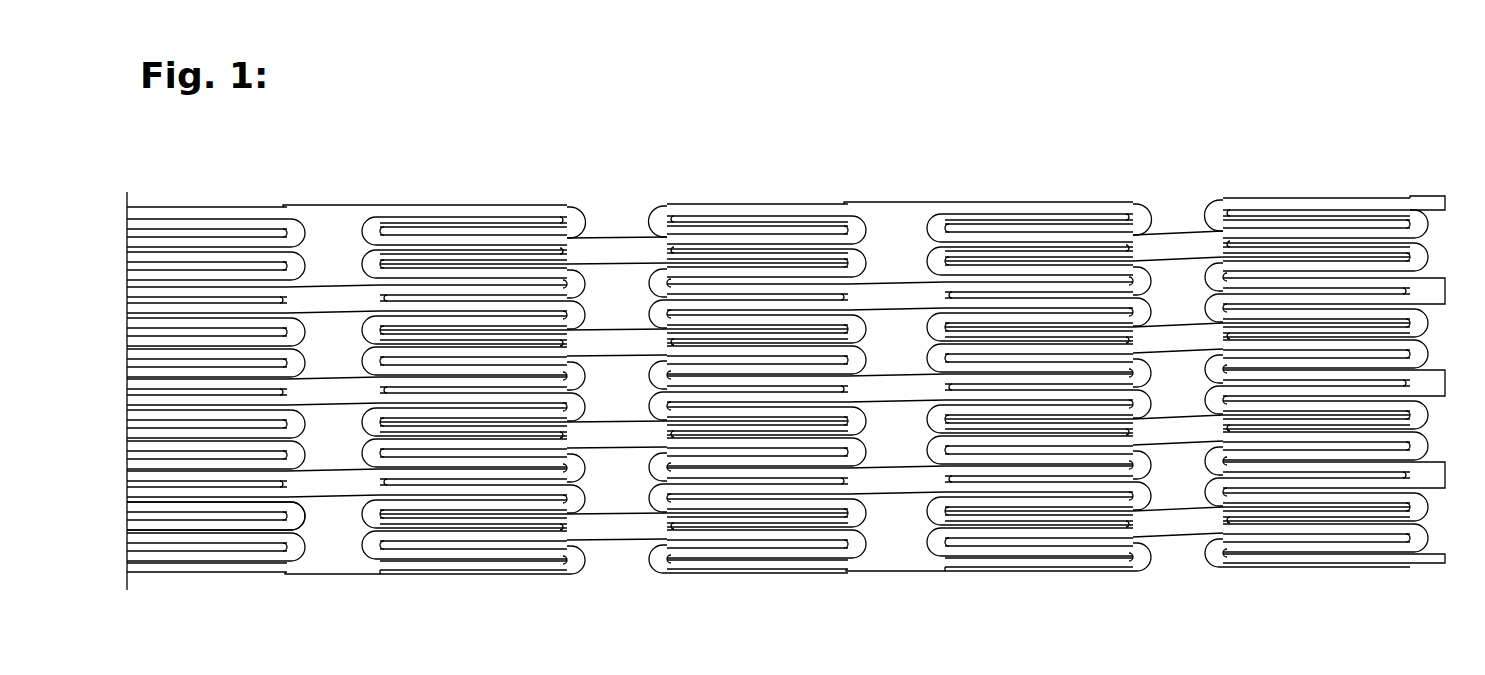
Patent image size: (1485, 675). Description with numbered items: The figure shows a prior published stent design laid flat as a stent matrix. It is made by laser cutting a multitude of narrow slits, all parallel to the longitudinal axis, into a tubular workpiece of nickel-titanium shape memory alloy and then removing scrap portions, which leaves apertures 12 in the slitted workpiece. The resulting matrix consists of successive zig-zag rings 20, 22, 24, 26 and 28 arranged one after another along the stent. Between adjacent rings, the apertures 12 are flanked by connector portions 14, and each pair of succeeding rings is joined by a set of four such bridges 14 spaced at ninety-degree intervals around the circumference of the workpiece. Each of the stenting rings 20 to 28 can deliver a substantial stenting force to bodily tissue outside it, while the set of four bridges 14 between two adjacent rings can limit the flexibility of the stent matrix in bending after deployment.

The aperture 12 is at (1192, 630).
The connector portion 14 is at (1168, 520).
The zig-zag ring 20 is at (253, 409).
The zig-zag ring 22 is at (514, 409).
The zig-zag ring 24 is at (797, 407).
The zig-zag ring 26 is at (1075, 407).
The zig-zag ring 28 is at (1325, 402).